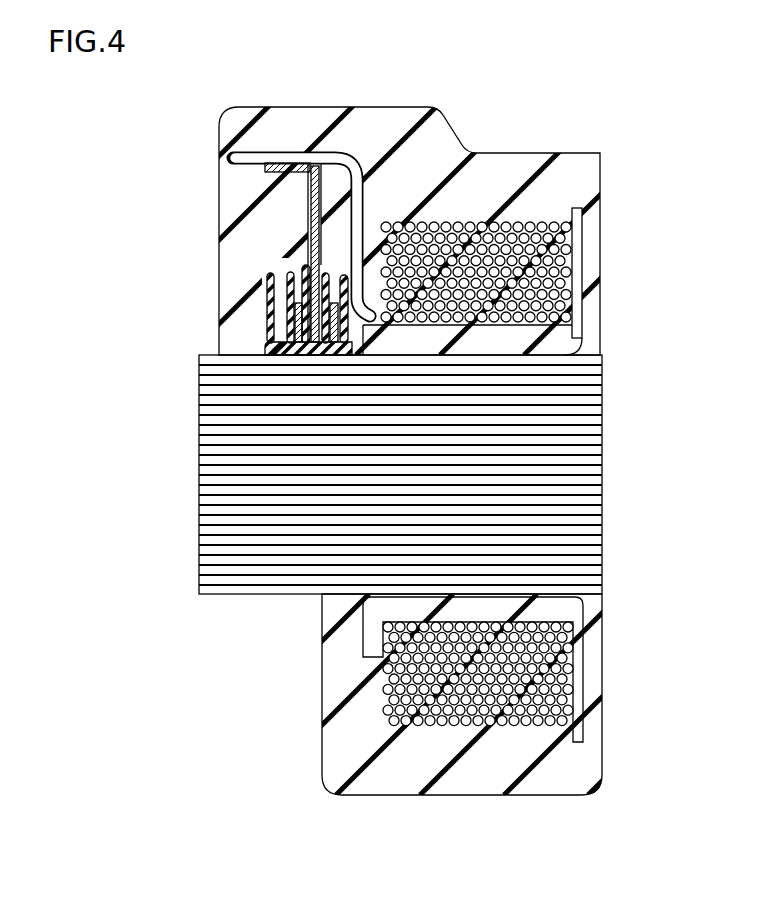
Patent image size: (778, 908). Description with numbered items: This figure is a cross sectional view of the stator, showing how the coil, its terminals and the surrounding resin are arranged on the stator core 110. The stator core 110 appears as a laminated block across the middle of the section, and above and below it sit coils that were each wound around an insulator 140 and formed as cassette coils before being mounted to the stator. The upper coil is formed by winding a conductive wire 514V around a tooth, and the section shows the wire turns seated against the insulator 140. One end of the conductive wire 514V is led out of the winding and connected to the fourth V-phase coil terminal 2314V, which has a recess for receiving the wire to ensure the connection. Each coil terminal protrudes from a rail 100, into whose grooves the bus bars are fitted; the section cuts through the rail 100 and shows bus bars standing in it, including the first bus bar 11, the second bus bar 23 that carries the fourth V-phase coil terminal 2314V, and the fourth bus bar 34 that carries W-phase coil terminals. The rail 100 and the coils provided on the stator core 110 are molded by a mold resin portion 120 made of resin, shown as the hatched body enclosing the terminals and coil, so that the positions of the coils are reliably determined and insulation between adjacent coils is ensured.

The first bus bar 11 is at (334, 284).
The mold resin portion 120 is at (405, 135).
The conductive wire 514V is at (528, 222).
The fourth V-phase coil terminal 2314V is at (265, 170).
The second bus bar 23 is at (318, 292).
The fourth bus bar 34 is at (300, 322).
The rail 100 is at (270, 348).
The insulator 140 is at (560, 343).
The stator core 110 is at (592, 465).